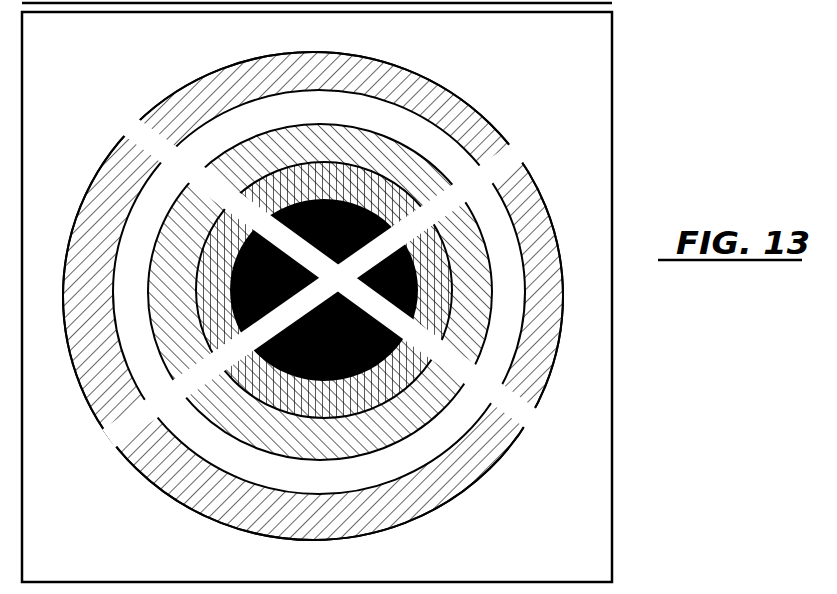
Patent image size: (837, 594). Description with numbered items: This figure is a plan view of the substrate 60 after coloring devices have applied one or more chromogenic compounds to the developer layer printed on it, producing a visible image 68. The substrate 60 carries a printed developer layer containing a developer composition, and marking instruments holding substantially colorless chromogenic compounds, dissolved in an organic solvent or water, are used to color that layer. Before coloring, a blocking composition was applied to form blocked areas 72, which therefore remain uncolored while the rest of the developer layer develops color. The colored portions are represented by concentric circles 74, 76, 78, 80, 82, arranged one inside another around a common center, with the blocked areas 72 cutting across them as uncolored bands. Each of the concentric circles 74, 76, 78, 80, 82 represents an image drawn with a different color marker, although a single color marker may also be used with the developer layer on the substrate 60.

The substrate 60 is at (363, 296).
The visible image 68 is at (558, 207).
The blocked areas 72 is at (172, 175).
The concentric circle 74 is at (397, 70).
The concentric circle 76 is at (372, 96).
The concentric circle 78 is at (362, 130).
The concentric circle 80 is at (365, 168).
The concentric circle 82 is at (362, 210).